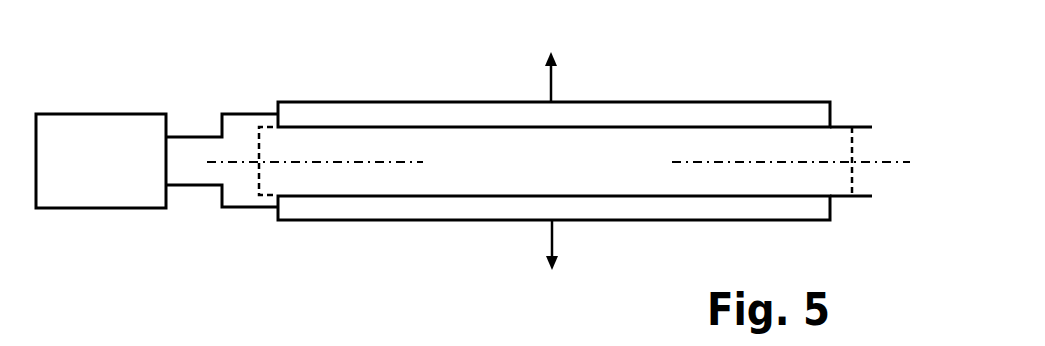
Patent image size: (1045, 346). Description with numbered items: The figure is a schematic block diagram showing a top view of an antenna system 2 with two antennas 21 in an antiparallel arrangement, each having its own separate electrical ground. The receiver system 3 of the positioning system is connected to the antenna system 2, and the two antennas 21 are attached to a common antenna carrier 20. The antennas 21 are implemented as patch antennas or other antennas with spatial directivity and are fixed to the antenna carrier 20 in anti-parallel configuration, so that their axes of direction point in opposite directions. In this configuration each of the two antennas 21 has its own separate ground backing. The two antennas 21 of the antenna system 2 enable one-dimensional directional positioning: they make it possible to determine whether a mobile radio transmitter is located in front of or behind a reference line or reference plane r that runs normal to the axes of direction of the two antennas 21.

The antenna system 2 is at (548, 158).
The receiver system 3 is at (97, 197).
The antenna carrier 20 is at (268, 135).
The antennas 21 is at (317, 115).
The reference line or reference plane r is at (893, 163).